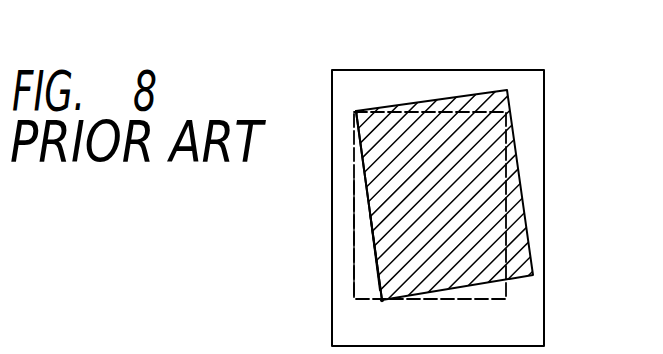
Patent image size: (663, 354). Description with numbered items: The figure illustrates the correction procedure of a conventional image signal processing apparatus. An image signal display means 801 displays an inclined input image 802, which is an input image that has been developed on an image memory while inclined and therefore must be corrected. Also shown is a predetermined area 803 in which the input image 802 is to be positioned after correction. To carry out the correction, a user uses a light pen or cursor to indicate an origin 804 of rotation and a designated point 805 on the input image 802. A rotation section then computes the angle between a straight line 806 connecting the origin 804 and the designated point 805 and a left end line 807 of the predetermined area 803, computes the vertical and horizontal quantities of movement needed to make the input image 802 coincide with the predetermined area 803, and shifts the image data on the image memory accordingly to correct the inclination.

The image signal display means 801 is at (544, 100).
The inclined input image 802 is at (437, 99).
The predetermined area 803 is at (506, 297).
The origin of rotation 804 is at (357, 110).
The designated point 805 is at (382, 300).
The straight line 806 is at (380, 290).
The left edge of intended frame 807 is at (353, 231).